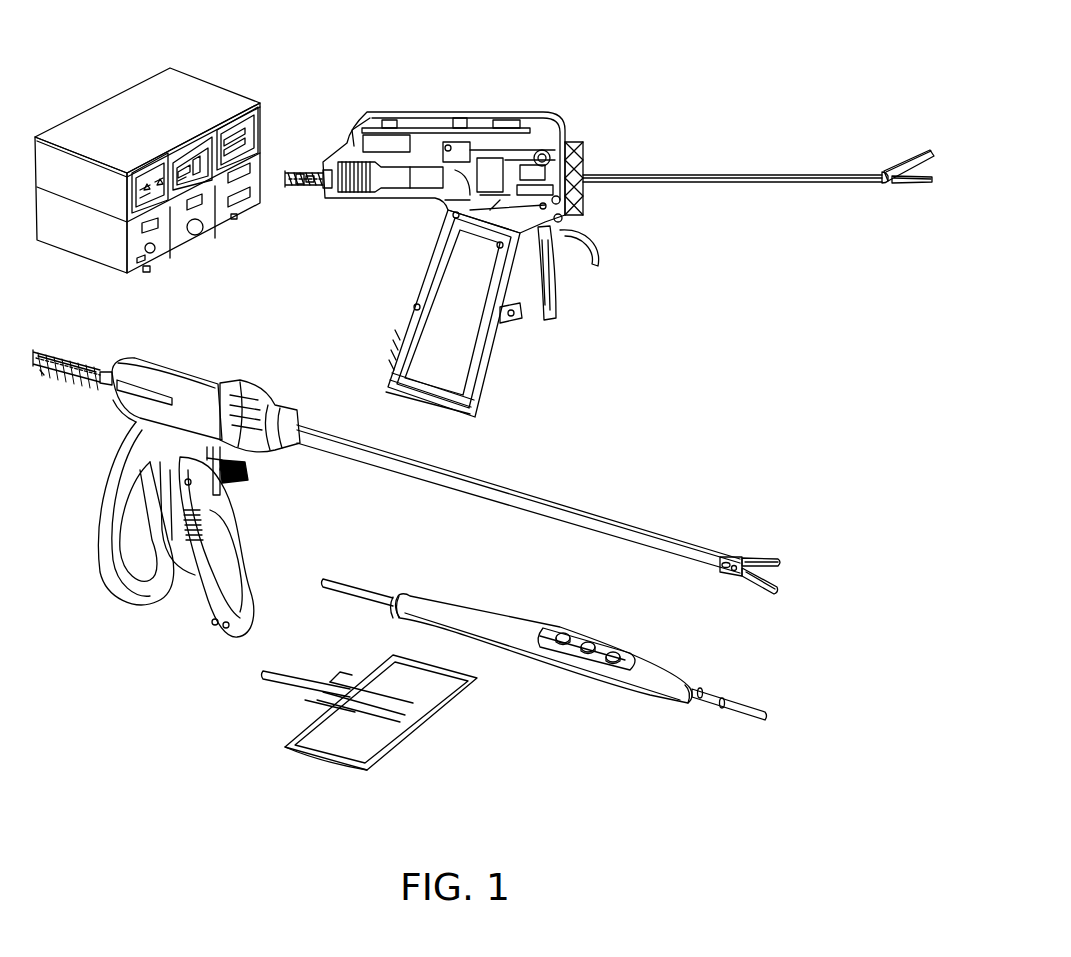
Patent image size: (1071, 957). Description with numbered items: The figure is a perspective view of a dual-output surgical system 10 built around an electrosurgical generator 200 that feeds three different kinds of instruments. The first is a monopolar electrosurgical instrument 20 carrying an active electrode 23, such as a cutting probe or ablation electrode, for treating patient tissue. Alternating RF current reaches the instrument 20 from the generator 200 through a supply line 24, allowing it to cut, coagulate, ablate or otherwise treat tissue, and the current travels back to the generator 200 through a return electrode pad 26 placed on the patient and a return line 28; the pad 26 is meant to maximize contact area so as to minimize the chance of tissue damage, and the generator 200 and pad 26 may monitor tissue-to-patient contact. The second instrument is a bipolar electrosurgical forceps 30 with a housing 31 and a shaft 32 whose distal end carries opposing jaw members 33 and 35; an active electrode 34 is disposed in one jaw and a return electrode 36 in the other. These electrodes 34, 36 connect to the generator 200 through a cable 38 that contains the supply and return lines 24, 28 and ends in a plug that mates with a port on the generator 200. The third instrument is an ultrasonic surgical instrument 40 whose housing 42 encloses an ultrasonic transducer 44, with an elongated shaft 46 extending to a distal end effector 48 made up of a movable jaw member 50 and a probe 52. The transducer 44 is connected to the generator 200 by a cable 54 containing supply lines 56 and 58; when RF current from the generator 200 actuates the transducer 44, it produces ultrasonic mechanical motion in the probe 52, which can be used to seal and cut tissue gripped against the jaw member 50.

The generator 200 is at (116, 78).
The ultrasonic surgical instrument 40 is at (603, 84).
The housing 42 is at (443, 111).
The ultrasonic transducer 44 is at (397, 180).
The elongated shaft 46 is at (768, 175).
The end effector 48 is at (905, 150).
The movable jaw member 50 is at (931, 154).
The probe 52 is at (921, 184).
The cable 54 is at (298, 188).
The supply line 56 is at (302, 171).
The supply line 58 is at (310, 188).
The bipolar electrosurgical forceps 30 is at (758, 492).
The housing 31 is at (192, 367).
The shaft 32 is at (521, 493).
The jaw member 33 is at (770, 557).
The active electrode 34 is at (782, 566).
The jaw member 35 is at (768, 596).
The return electrode 36 is at (780, 585).
The cable 38 is at (86, 365).
The dual-output system 10 is at (542, 609).
The monopolar electrosurgical instrument 20 is at (667, 661).
The active electrode 23 is at (738, 705).
The supply line 24 is at (53, 405).
The return electrode pad 26 is at (327, 785).
The return line 28 is at (313, 657).